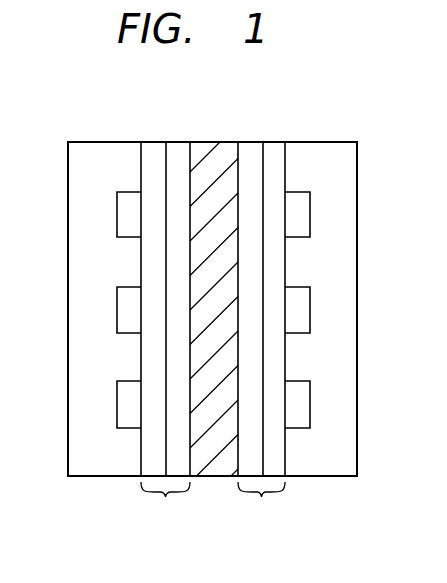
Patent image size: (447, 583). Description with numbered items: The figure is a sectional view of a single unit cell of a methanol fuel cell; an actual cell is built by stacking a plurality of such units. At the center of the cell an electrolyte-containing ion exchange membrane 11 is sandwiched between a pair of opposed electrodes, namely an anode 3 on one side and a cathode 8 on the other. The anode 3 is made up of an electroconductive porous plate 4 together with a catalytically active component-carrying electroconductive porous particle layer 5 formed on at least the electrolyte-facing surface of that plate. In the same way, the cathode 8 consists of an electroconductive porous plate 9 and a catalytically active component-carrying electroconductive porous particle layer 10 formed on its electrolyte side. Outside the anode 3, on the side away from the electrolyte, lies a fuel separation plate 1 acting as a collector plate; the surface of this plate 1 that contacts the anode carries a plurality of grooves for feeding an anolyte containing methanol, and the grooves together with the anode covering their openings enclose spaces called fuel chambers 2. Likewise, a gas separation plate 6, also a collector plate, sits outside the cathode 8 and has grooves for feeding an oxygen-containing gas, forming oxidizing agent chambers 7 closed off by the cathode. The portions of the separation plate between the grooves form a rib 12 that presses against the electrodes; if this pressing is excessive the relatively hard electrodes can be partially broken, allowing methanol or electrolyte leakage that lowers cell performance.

The fuel separation plate 1 is at (88, 470).
The fuel chambers 2 is at (127, 395).
The anode 3 is at (165, 501).
The electroconductive porous plate 4 is at (155, 152).
The catalytically active component-carrying electroconductive porous particle layer 5 is at (180, 152).
The gas separation plate 6 is at (340, 448).
The oxidizing agent chambers 7 is at (298, 403).
The cathode 8 is at (261, 501).
The electroconductive porous plate 9 is at (275, 152).
The catalytically active component-carrying electroconductive porous particle layer 10 is at (249, 152).
The ion exchange membrane 11 is at (213, 472).
The rib 12 is at (305, 271).